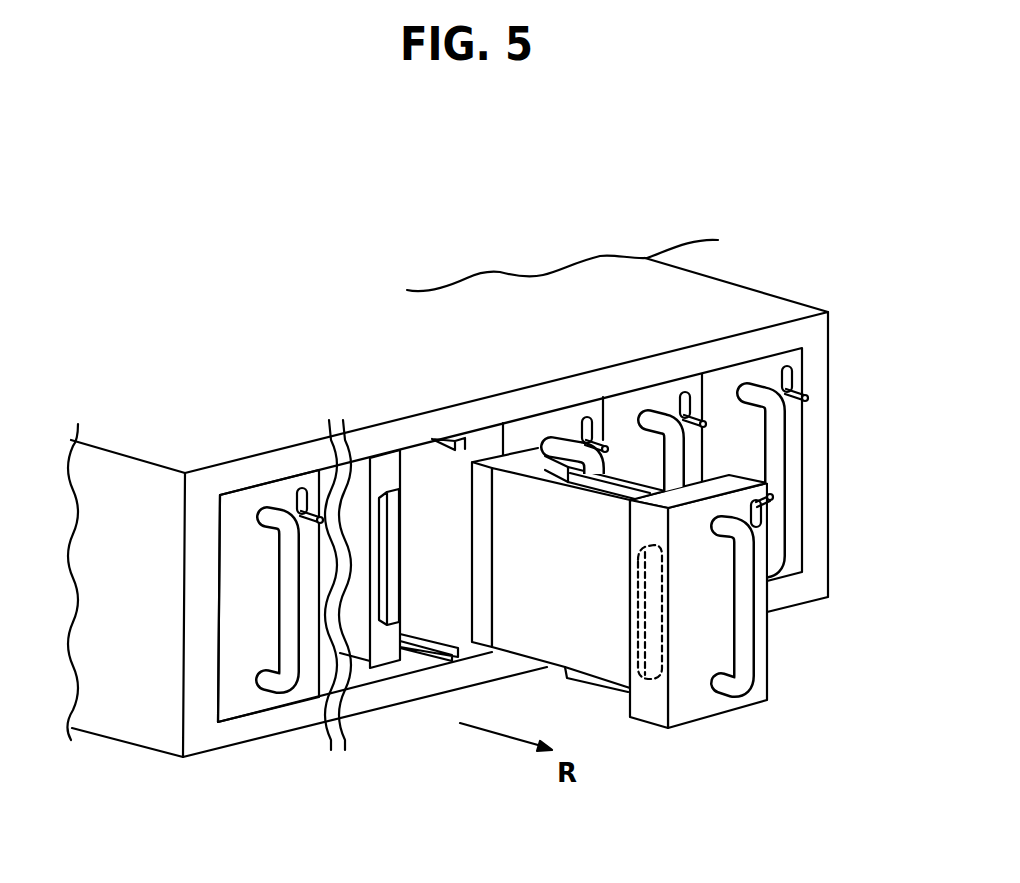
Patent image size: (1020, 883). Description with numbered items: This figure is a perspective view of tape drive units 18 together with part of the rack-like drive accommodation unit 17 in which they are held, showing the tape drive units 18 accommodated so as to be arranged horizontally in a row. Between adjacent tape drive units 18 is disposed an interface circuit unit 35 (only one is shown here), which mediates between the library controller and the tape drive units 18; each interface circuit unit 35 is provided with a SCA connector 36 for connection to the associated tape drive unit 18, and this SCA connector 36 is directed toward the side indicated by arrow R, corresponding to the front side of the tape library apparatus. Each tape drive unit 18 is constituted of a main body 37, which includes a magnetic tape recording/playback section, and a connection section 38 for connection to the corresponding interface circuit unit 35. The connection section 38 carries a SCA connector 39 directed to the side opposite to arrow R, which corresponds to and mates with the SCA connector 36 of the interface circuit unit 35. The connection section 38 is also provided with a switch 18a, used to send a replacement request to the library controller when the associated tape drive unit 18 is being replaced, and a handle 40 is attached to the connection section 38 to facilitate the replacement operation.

The drive accommodation unit 17 is at (707, 273).
The tape drive unit 18 is at (738, 380).
The switch 18a is at (315, 512).
The interface circuit unit 35 is at (381, 640).
The SCA connector 36 is at (397, 567).
The main body 37 is at (537, 623).
The connection section 38 is at (643, 702).
The SCA connector 39 is at (626, 599).
The handle 40 is at (667, 417).